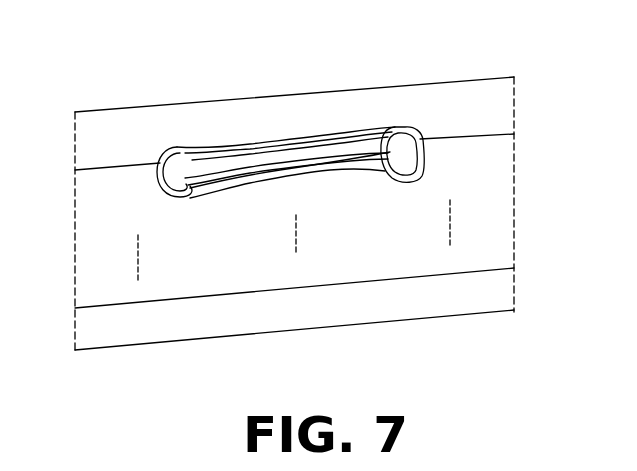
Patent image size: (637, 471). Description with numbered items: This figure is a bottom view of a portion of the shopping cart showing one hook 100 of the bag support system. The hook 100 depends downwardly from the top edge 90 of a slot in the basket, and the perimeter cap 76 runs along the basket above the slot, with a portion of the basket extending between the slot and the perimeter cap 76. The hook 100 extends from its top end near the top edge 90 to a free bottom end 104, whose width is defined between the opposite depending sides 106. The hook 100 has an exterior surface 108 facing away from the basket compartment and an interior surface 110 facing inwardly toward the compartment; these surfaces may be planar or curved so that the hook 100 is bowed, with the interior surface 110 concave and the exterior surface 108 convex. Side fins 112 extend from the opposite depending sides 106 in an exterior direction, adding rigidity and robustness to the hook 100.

The perimeter cap 76 is at (120, 327).
The top edge 90 is at (480, 238).
The hook 100 is at (168, 200).
The bottom end 104 is at (292, 152).
The opposite depending sides 106 is at (157, 186).
The exterior surface 108 is at (203, 185).
The interior surface 110 is at (360, 147).
The side fins 112 is at (185, 147).